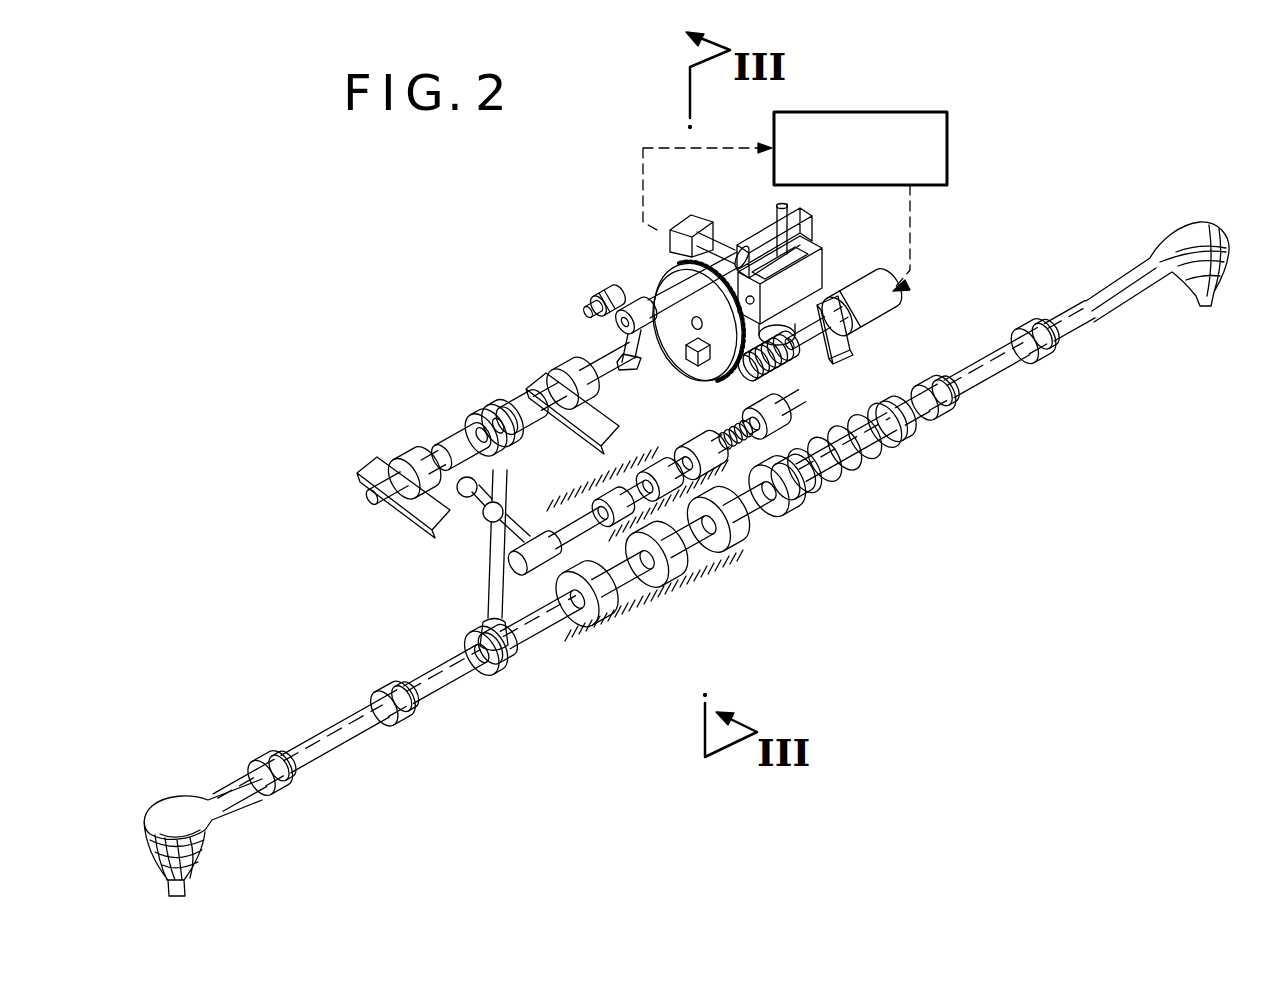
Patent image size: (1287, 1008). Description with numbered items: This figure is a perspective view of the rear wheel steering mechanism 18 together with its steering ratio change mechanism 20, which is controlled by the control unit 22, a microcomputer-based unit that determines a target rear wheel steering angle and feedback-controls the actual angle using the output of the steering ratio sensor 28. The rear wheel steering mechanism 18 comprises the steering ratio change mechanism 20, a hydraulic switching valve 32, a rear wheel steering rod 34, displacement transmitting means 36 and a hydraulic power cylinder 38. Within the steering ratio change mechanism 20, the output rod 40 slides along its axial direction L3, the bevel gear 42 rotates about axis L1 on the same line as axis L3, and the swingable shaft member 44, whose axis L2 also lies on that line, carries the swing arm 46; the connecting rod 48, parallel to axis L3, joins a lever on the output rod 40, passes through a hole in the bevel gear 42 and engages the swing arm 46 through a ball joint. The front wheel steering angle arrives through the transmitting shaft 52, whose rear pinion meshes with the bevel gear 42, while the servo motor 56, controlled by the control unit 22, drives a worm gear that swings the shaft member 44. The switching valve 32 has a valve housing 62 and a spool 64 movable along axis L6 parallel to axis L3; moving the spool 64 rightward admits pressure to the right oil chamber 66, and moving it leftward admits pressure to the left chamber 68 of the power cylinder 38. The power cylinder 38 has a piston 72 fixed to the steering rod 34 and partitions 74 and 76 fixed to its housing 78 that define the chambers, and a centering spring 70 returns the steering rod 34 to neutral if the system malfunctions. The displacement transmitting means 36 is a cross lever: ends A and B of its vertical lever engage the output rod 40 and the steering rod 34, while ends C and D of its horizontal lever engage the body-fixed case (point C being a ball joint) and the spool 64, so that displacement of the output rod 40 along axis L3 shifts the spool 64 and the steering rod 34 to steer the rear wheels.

The rear wheel steering mechanism 18 is at (518, 305).
The steering ratio change mechanism 20 is at (642, 276).
The control unit 22 is at (852, 111).
The steering ratio sensor 28 is at (678, 222).
The hydraulic switching valve 32 is at (785, 368).
The rear wheel steering rod 34 is at (992, 384).
The displacement transmitting means 36 is at (476, 569).
The hydraulic power cylinder 38 is at (636, 615).
The output rod 40 is at (545, 400).
The bevel gear 42 is at (645, 302).
The swingable shaft member 44 is at (824, 293).
The swing arm 46 is at (778, 216).
The connecting rod 48 is at (655, 283).
The transmitting shaft 52 is at (585, 300).
The servo motor 56 is at (885, 316).
The valve housing 62 is at (668, 452).
The spool 64 is at (755, 420).
The right oil chamber 66 is at (725, 562).
The left chamber 68 is at (642, 590).
The centering spring 70 is at (858, 466).
The piston 72 is at (686, 576).
The partition 74 is at (583, 612).
The partition 76 is at (747, 520).
The housing 78 is at (598, 640).
The engaging point A is at (516, 456).
The engaging point B is at (488, 628).
The engaging point C is at (488, 516).
The engaging point D is at (540, 530).
The axis L1 is at (835, 262).
The axis L2 is at (792, 278).
The axial direction L3 is at (364, 506).
The axis L6 is at (795, 398).